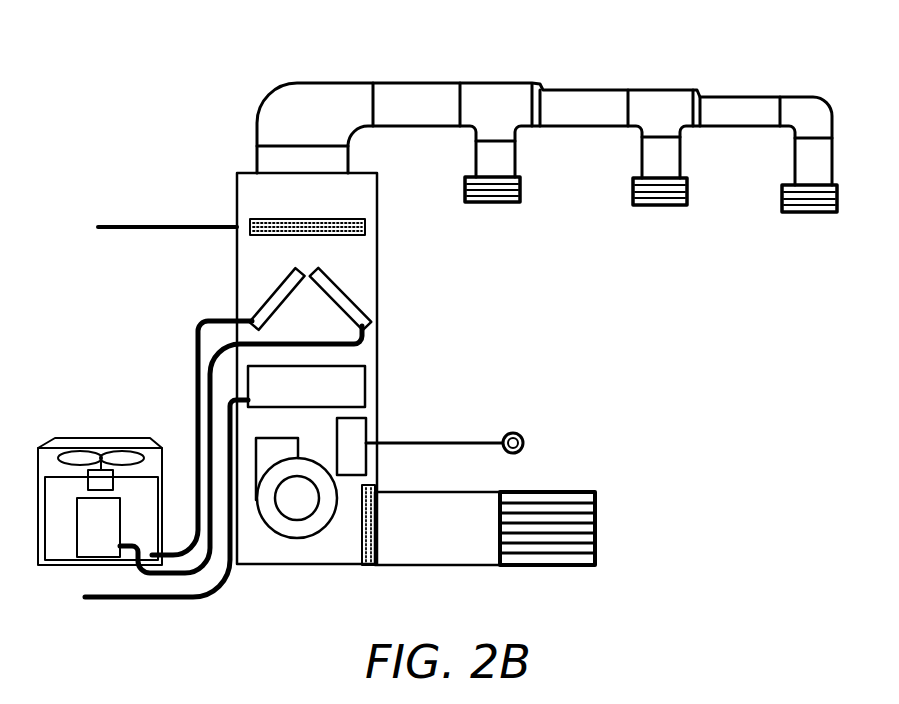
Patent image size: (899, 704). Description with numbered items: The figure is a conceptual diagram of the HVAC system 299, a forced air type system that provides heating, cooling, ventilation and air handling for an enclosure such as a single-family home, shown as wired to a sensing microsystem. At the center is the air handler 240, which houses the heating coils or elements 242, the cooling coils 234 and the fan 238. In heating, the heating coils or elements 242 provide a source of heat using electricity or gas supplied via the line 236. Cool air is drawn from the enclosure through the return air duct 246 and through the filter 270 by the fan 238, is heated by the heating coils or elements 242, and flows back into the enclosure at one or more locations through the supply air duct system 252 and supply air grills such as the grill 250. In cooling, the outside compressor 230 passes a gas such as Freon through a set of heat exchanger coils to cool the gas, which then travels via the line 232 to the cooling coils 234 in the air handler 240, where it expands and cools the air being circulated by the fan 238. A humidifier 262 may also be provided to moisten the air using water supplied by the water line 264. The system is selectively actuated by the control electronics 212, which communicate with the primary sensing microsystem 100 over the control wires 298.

The primary sensing microsystem 100 is at (526, 441).
The control electronics 212 is at (368, 455).
The outside compressor 230 is at (85, 438).
The line 232 is at (195, 383).
The cooling coils 234 is at (266, 298).
The line 236 is at (210, 598).
The fan 238 is at (298, 530).
The air handler 240 is at (236, 173).
The heating coils or elements 242 is at (327, 397).
The return air duct 246 is at (597, 550).
The supply air grill 250 is at (521, 196).
The supply air duct system 252 is at (577, 88).
The humidifier 262 is at (370, 228).
The water line 264 is at (120, 230).
The filter 270 is at (376, 542).
The control wires 298 is at (438, 440).
The HVAC system 299 is at (727, 408).